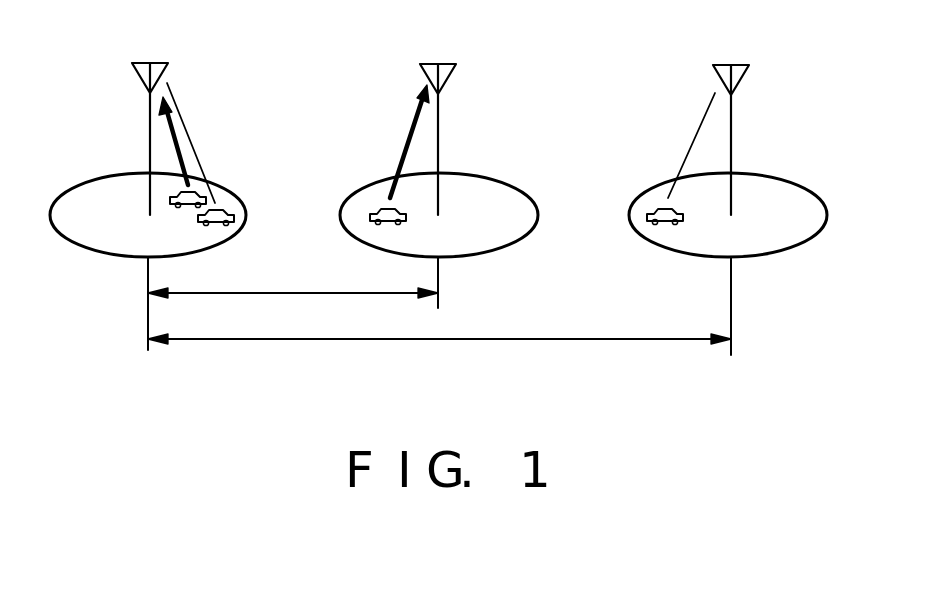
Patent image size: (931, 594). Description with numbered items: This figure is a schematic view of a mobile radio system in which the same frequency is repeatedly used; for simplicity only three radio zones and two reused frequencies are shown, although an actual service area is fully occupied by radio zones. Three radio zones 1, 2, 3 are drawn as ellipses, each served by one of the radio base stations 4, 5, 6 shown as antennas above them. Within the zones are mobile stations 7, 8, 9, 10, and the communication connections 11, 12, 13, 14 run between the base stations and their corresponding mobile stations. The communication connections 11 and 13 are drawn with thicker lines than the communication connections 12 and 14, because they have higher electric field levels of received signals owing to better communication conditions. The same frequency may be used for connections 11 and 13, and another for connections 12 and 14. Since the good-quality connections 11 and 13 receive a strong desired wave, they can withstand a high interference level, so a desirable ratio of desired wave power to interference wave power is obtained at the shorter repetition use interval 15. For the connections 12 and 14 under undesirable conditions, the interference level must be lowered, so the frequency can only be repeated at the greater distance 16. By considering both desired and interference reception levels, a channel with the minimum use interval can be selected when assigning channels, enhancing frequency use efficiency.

The radio zone 1 is at (96, 176).
The radio zone 2 is at (365, 186).
The radio zone 3 is at (651, 190).
The radio base station 4 is at (148, 61).
The radio base station 5 is at (437, 62).
The radio base station 6 is at (730, 63).
The mobile station 7 is at (176, 214).
The mobile station 8 is at (232, 214).
The mobile station 9 is at (409, 217).
The mobile station 10 is at (685, 218).
The communication connection 11 is at (175, 111).
The communication connection 12 is at (195, 130).
The communication connection 13 is at (411, 114).
The communication connection 14 is at (699, 122).
The repetition use interval 15 is at (293, 304).
The distance 16 is at (439, 306).